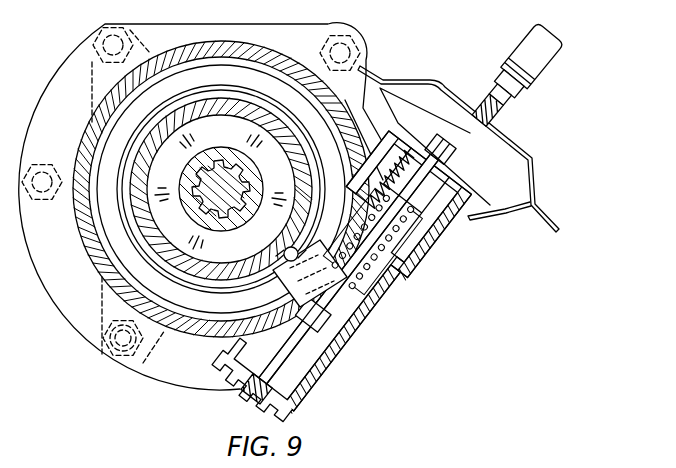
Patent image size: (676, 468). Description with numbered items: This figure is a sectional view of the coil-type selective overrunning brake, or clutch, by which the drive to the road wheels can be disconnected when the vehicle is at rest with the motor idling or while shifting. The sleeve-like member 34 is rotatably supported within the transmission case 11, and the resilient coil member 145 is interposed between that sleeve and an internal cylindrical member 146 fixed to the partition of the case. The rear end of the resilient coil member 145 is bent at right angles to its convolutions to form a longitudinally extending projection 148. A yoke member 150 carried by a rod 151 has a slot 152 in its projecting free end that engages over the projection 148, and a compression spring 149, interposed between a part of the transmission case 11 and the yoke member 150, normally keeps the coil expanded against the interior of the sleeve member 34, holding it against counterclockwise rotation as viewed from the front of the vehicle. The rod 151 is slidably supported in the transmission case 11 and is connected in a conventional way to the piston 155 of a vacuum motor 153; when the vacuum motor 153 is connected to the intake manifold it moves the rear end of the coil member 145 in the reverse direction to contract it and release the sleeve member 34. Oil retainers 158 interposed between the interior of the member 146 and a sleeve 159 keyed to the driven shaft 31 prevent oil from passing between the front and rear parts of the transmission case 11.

The transmission case 11 is at (245, 42).
The sleeve-like member 34 is at (112, 152).
The sleeve 159 is at (188, 194).
The internal cylindrical member 146 is at (143, 211).
The driven shaft 31 is at (205, 214).
The projection 148 is at (282, 247).
The resilient coil member 145 is at (140, 247).
The slot 152 is at (291, 262).
The oil retainers 158 is at (213, 258).
The vacuum motor 153 is at (418, 82).
The piston 155 is at (503, 205).
The rod 151 is at (432, 236).
The compression spring 149 is at (408, 280).
The yoke member 150 is at (360, 313).